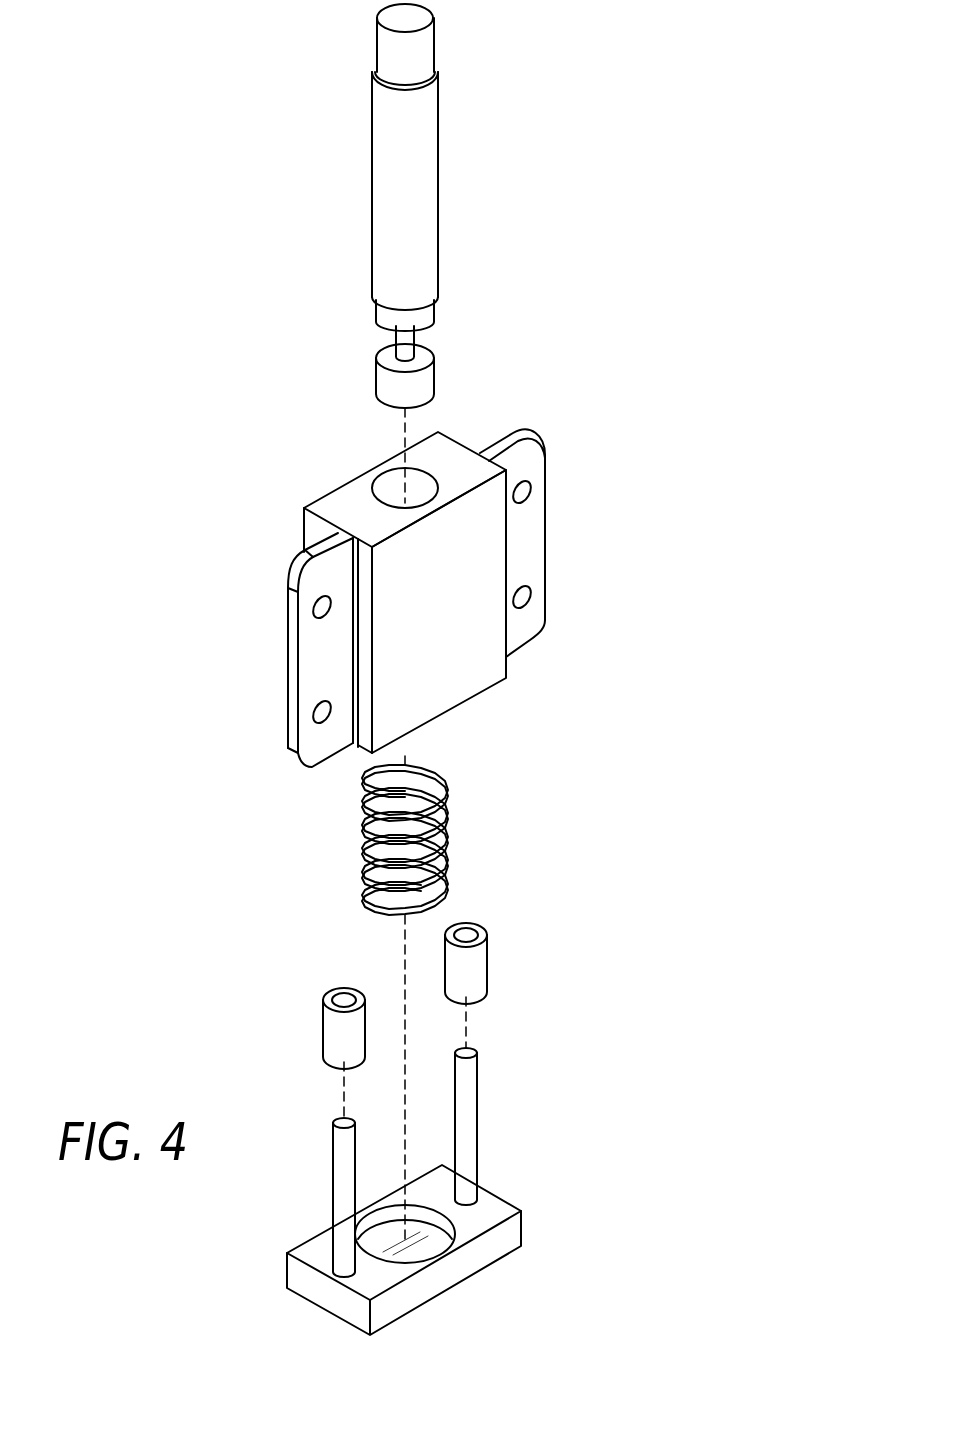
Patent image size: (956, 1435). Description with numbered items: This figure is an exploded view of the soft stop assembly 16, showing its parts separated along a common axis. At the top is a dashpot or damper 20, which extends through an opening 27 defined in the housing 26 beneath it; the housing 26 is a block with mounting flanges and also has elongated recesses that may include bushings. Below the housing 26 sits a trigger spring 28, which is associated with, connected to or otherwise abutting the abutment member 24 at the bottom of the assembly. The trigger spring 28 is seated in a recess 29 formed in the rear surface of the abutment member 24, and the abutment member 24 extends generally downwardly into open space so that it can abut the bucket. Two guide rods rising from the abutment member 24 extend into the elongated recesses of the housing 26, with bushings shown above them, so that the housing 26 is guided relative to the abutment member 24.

The soft stop assembly 16 is at (604, 233).
The dashpot or damper 20 is at (385, 212).
The abutment member 24 is at (507, 1238).
The housing 26 is at (478, 565).
The opening 27 is at (390, 483).
The trigger spring 28 is at (447, 802).
The recess 29 is at (433, 1248).